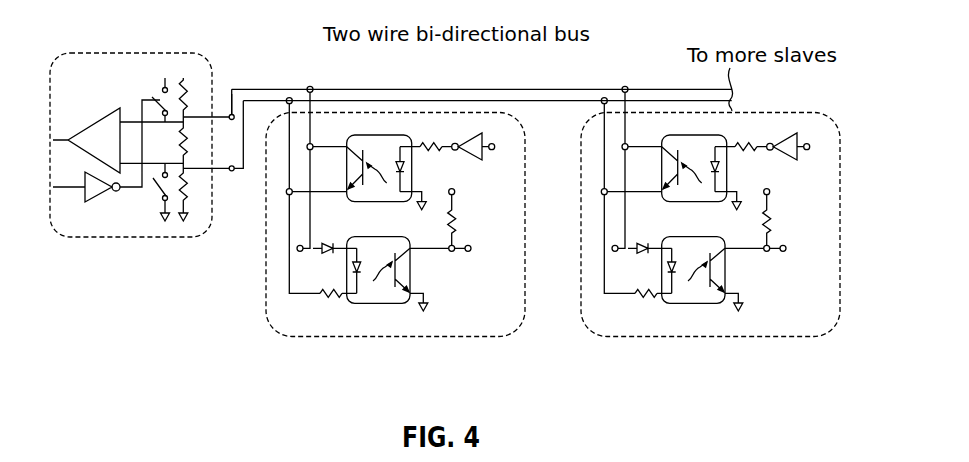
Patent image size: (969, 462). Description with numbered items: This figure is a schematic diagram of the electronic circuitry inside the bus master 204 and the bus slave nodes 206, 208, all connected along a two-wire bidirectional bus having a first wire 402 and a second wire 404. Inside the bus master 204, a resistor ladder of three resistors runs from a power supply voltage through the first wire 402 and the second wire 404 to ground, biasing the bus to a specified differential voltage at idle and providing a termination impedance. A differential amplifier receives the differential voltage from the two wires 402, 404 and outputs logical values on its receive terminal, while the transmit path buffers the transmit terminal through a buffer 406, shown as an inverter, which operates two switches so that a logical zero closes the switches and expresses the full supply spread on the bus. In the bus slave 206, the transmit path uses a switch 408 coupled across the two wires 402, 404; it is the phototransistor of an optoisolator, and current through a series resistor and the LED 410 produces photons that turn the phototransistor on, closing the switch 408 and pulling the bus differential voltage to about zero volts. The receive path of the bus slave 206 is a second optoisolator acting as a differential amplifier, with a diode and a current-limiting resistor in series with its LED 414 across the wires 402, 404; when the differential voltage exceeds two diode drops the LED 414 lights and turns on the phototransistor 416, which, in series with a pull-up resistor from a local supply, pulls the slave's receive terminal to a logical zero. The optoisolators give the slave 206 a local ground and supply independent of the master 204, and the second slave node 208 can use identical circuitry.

The bus master 204 is at (154, 177).
The bus slave node 206 is at (392, 232).
The second bus slave node 208 is at (610, 337).
The first wire 402 is at (252, 88).
The second wire 404 is at (233, 171).
The buffer 406 is at (92, 198).
The switch 408 is at (387, 149).
The LED 410 is at (399, 173).
The LED 414 is at (357, 290).
The phototransistor 416 is at (410, 255).